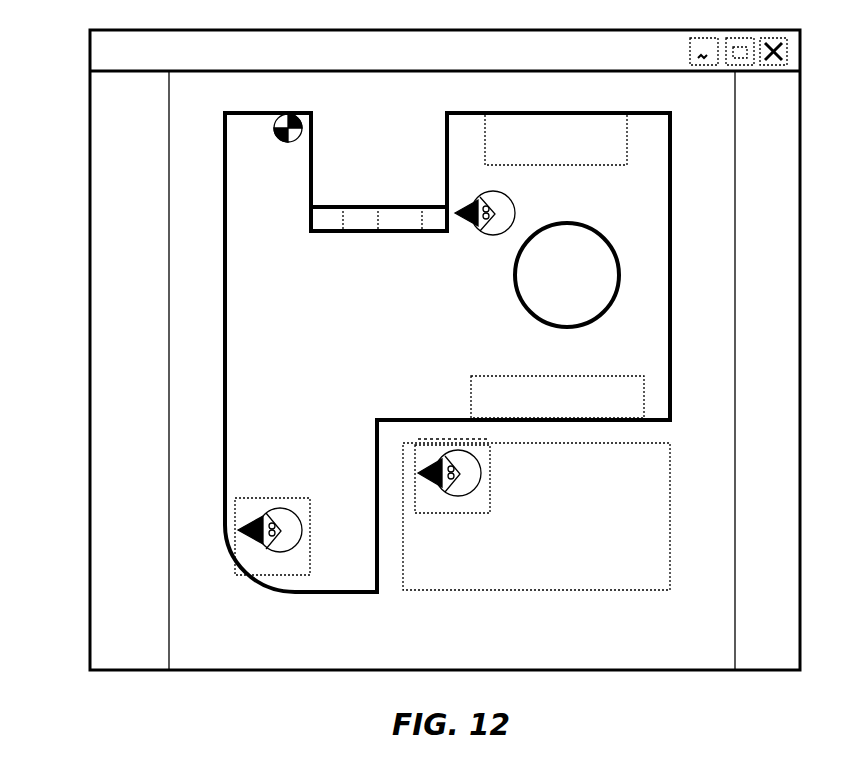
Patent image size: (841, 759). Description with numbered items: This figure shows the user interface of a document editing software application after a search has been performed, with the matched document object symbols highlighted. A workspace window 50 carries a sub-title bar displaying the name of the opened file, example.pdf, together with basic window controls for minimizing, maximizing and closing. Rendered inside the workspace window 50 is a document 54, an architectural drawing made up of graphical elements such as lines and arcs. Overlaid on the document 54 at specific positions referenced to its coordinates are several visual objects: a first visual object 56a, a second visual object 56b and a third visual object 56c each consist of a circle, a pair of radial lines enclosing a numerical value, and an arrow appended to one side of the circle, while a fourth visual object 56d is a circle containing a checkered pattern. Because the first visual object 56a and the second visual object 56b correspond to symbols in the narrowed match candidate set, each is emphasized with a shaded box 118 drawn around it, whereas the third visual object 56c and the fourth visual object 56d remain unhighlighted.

The workspace window 50 is at (90, 220).
The document 54 is at (168, 158).
The first visual object 56a is at (481, 473).
The second visual object 56b is at (282, 504).
The third visual object 56c is at (515, 208).
The fourth visual object 56d is at (288, 142).
The shaded box 118 is at (443, 513).